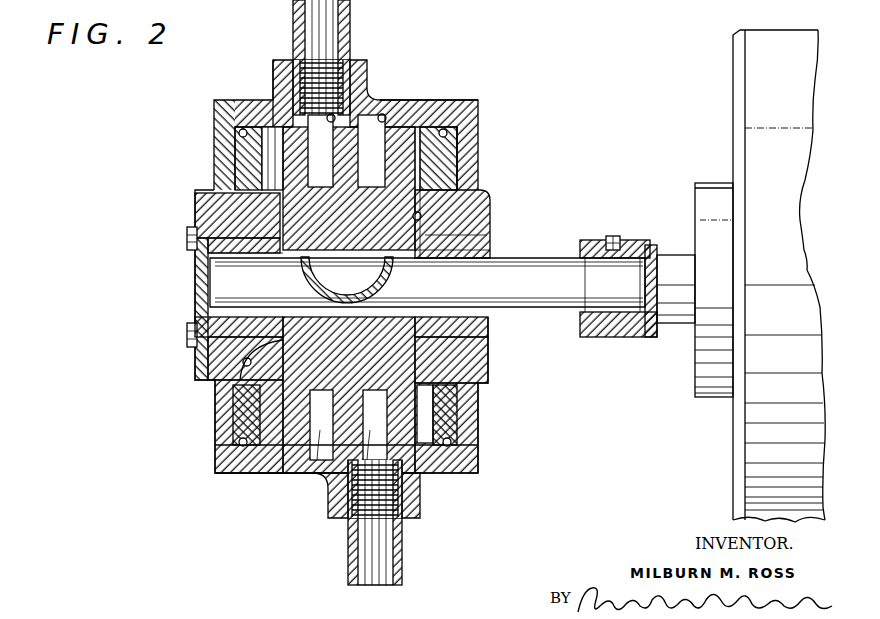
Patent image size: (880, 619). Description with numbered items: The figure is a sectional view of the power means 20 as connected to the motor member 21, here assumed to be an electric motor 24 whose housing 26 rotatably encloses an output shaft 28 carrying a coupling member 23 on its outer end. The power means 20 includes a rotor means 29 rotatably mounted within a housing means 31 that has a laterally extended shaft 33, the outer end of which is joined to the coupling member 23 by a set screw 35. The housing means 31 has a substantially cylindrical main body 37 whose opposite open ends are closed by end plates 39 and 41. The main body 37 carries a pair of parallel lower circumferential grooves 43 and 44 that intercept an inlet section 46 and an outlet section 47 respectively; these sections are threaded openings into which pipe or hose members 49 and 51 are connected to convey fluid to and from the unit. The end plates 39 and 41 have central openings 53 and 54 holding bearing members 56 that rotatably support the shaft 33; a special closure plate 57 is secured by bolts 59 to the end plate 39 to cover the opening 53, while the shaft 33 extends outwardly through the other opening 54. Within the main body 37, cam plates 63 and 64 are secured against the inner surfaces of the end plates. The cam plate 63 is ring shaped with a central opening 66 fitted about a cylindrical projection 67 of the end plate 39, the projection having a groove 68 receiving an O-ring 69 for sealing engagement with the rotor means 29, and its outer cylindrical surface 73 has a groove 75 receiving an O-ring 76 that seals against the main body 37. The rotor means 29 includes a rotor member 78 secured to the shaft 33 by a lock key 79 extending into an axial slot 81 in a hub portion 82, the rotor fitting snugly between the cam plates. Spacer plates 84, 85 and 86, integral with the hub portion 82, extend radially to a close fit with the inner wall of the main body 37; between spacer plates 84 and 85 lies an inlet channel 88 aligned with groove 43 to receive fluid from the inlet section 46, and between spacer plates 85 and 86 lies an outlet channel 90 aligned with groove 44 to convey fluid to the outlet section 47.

The power means 20 is at (491, 86).
The motor member 21 is at (708, 103).
The coupling member 23 is at (632, 250).
The electric motor 24 is at (753, 387).
The housing 26 is at (710, 205).
The output shaft 28 is at (682, 308).
The rotor means 29 is at (500, 262).
The housing means 31 is at (411, 91).
The shaft 33 is at (571, 291).
The set screw 35 is at (618, 240).
The main body 37 is at (252, 97).
The end plate 39 is at (212, 118).
The end plate 41 is at (465, 146).
The circumferential groove 43 is at (372, 88).
The circumferential groove 44 is at (425, 105).
The inlet section 46 is at (350, 58).
The outlet section 47 is at (421, 505).
The pipe or hose member 49 is at (347, 29).
The pipe or hose member 51 is at (375, 560).
The central opening 53 is at (205, 260).
The central opening 54 is at (470, 246).
The bearing member 56 is at (200, 343).
The closure plate 57 is at (210, 301).
The bolt 59 is at (189, 229).
The cam plate 63 is at (212, 162).
The cam plate 64 is at (468, 167).
The central opening 66 is at (215, 379).
The cylindrical projection 67 is at (270, 98).
The groove 68 is at (245, 363).
The O-ring 69 is at (275, 478).
The outer cylindrical surface 73 is at (240, 478).
The groove 75 is at (226, 455).
The O-ring 76 is at (236, 480).
The rotor member 78 is at (455, 192).
The lock key 79 is at (215, 274).
The axial slot 81 is at (490, 210).
The hub portion 82 is at (333, 210).
The spacer plate 84 is at (288, 54).
The spacer plate 85 is at (385, 98).
The spacer plate 86 is at (470, 151).
The inlet channel 88 is at (306, 478).
The outlet channel 90 is at (331, 476).